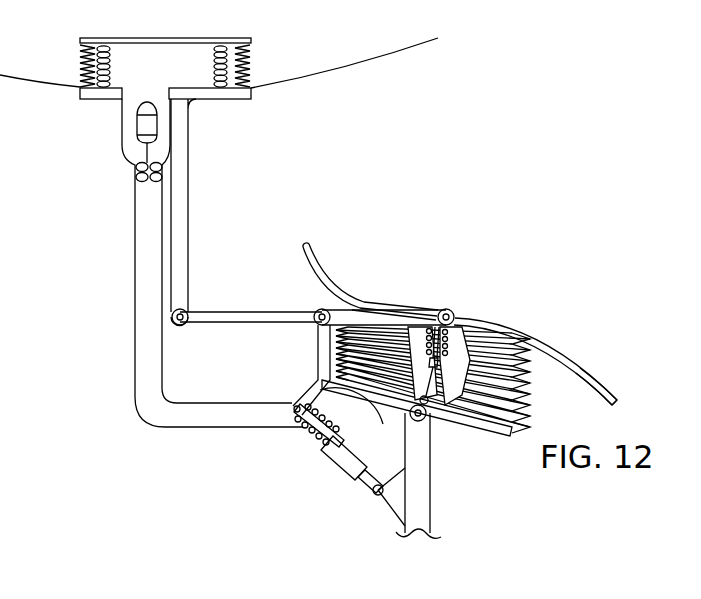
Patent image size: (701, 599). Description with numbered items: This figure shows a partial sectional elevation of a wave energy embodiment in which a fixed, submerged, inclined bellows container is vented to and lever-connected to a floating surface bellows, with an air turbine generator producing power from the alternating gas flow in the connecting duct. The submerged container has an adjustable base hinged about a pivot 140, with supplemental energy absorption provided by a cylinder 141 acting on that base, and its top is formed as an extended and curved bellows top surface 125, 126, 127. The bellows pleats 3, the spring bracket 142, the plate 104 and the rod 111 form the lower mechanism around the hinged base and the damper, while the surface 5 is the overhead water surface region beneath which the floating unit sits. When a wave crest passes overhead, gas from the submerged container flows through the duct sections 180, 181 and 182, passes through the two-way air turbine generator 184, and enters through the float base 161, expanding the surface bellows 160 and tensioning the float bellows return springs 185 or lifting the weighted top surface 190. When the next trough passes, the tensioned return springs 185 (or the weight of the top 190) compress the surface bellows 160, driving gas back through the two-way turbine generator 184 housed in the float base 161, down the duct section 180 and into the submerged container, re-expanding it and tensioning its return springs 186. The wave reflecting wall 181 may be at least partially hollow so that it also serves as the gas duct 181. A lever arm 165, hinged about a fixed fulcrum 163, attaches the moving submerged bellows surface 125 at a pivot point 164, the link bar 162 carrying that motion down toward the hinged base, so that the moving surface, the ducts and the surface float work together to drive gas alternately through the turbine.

The bellows 3 is at (515, 405).
The vehicle body / wing 5 is at (433, 40).
The plate 104 is at (442, 402).
The rod 111 is at (432, 488).
The moving submerged bellows surface 125 is at (502, 327).
The extended bellows top surface portion 126 is at (585, 373).
The curved bellows top surface portion 127 is at (312, 255).
The pivot 140 is at (410, 422).
The cylinder 141 is at (342, 473).
The spring bracket 142 is at (308, 438).
The surface bellows 160 is at (94, 100).
The float base 161 is at (233, 50).
The link bar 162 is at (318, 348).
The fixed fulcrum 163 is at (318, 312).
The pivot point 164 is at (446, 308).
The lever arm 165 is at (208, 315).
The duct section 180 is at (135, 290).
The duct section / wave reflecting wall 181 is at (190, 183).
The duct section 182 is at (137, 170).
The two-way air turbine generator 184 is at (147, 123).
The return springs 185 is at (213, 62).
The return springs 186 is at (453, 325).
The weighted top surface 190 is at (86, 38).